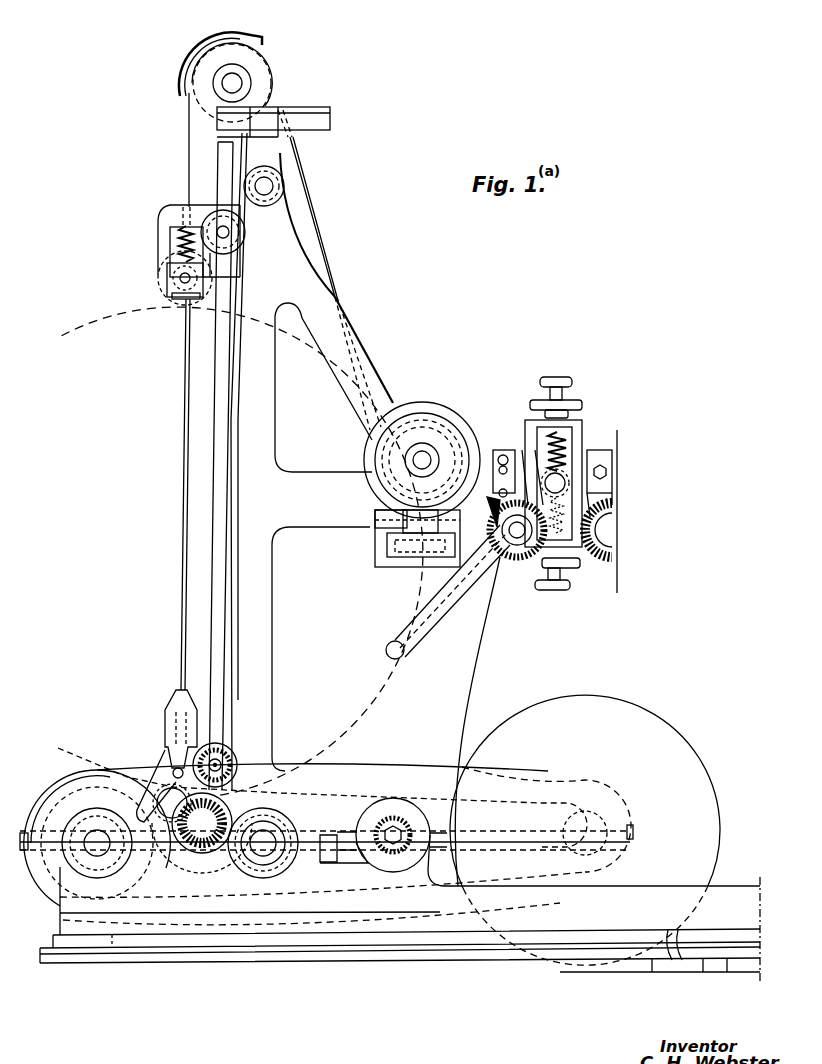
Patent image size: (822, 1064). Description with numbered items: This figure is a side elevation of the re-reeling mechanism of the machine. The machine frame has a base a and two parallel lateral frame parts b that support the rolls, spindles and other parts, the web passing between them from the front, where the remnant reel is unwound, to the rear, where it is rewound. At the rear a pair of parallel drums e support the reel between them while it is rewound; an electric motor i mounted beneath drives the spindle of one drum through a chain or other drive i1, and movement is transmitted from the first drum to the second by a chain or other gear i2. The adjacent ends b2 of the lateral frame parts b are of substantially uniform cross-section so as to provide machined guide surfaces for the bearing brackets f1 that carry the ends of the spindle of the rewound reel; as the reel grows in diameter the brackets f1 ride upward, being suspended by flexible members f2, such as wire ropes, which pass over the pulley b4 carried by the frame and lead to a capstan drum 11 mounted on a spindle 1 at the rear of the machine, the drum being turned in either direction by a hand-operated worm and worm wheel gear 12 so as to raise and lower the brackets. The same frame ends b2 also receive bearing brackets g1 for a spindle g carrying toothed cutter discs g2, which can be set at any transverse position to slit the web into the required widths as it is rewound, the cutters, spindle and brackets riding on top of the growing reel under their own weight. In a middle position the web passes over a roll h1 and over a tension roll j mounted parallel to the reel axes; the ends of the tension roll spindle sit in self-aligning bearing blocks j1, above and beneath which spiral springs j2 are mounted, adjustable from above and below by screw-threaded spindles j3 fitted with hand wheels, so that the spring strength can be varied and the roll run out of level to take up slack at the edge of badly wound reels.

The base a is at (420, 947).
The lateral frame parts b is at (304, 490).
The adjacent ends of the lateral frame parts b2 is at (212, 568).
The pulley b4 is at (257, 78).
The drums e is at (107, 772).
The bearing brackets f1 is at (203, 752).
The flexible members f2 is at (185, 415).
The spindle g is at (182, 267).
The bearing brackets g1 is at (177, 208).
The toothed cutter discs g2 is at (168, 283).
The roll h1 is at (387, 806).
The electric motor i is at (697, 812).
The chain or other drive i1 is at (380, 885).
The chain or other gear i2 is at (160, 898).
The tension roll j is at (578, 443).
The self-aligning bearing blocks j1 is at (568, 440).
The spiral springs j2 is at (547, 540).
The screw-threaded spindles j3 is at (559, 377).
The spindle 1 is at (423, 450).
The capstan drum 11 is at (455, 418).
The worm and worm wheel gear 12 is at (380, 533).